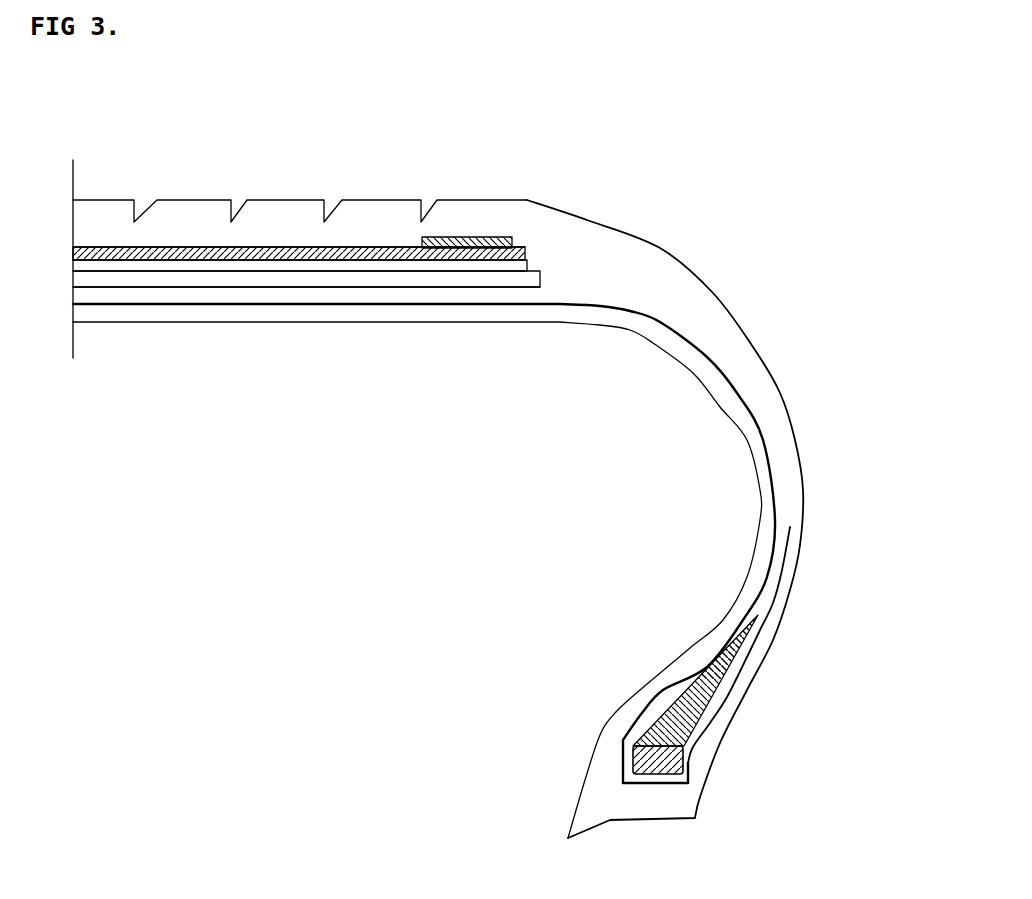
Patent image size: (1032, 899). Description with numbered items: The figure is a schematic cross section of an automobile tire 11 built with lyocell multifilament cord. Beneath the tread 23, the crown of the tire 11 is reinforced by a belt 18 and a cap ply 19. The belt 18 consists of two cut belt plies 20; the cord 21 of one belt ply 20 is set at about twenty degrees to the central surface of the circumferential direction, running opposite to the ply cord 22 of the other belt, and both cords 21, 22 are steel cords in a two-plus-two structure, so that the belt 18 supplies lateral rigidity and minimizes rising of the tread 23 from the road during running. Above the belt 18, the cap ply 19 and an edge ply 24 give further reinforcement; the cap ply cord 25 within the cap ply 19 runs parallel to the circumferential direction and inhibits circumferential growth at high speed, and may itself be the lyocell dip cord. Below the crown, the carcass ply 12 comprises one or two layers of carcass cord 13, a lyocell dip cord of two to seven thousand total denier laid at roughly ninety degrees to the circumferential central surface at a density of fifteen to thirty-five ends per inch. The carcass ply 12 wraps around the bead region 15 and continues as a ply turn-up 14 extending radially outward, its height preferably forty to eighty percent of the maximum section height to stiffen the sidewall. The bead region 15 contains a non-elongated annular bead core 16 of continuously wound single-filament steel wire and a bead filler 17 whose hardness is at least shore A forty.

The tire 11 is at (663, 248).
The carcass ply 12 is at (663, 317).
The carcass cord 13 is at (753, 407).
The ply turn-up 14 is at (790, 598).
The bead region 15 is at (660, 722).
The bead core 16 is at (668, 763).
The bead filler 17 is at (728, 670).
The belt 18 is at (353, 263).
The cap ply 19 is at (200, 243).
The belt ply 20 is at (364, 281).
The cord of the belt ply 21 is at (165, 270).
The ply cord of another belt 22 is at (238, 283).
The tread 23 is at (285, 203).
The edge ply 24 is at (472, 235).
The cap ply cord 25 is at (127, 243).